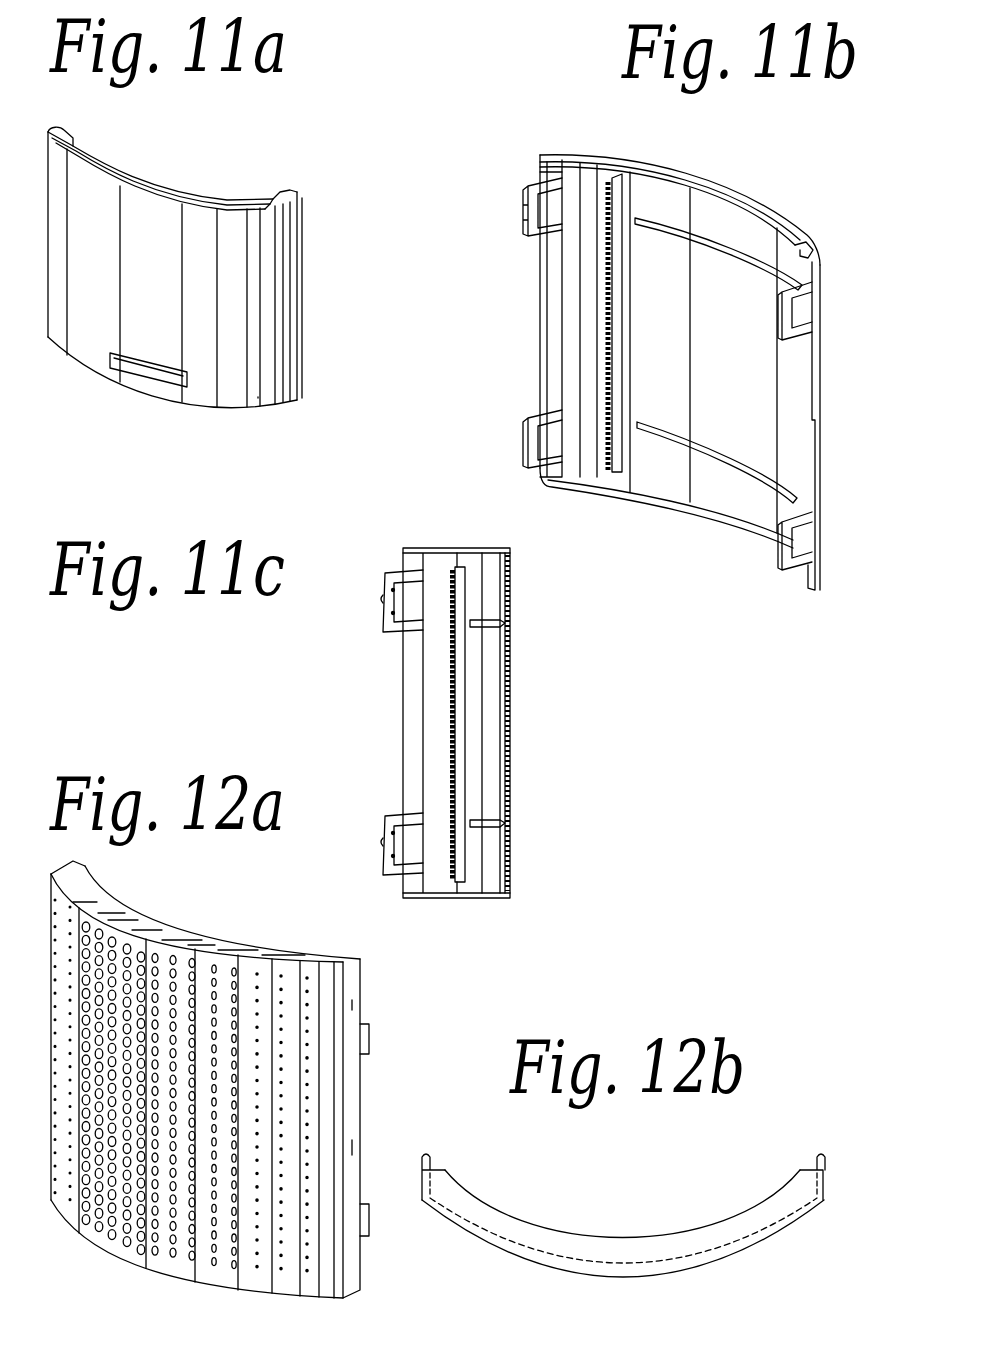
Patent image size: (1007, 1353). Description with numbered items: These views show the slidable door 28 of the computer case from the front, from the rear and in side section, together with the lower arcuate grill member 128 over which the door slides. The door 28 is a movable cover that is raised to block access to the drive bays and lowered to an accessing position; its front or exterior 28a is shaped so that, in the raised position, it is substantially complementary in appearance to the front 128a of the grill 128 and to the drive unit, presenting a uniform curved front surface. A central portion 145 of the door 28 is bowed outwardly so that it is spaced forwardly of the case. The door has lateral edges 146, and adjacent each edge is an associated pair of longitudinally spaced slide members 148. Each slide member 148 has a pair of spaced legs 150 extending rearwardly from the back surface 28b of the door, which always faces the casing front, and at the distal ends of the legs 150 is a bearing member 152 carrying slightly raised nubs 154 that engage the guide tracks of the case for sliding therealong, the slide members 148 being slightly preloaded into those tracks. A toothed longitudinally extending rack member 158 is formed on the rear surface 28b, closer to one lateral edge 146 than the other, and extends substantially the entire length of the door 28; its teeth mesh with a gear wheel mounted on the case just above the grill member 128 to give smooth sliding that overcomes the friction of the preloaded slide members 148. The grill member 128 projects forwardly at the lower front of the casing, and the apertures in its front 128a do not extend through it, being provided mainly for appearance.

In FIG. 11A, the slidable door 28 is at (218, 283).
In FIG. 11A, the exterior of the sliding door 28a is at (258, 397).
In FIG. 11B, the back surface of the door 28b is at (647, 355).
In FIG. 11A, the central portion of the door 145 is at (134, 172).
In FIG. 11B, the lateral edges of the door 146 is at (820, 438).
In FIG. 11B, the slide members 148 is at (510, 222).
In FIG. 11C, the slide members 148 is at (451, 697).
In FIG. 11C, the legs of the slide members 150 is at (410, 578).
In FIG. 11C, the bearing member 152 is at (383, 600).
In FIG. 11B, the raised nubs 154 is at (808, 335).
In FIG. 11B, the toothed longitudinally extending member 158 is at (617, 235).
In FIG. 11C, the toothed longitudinally extending member 158 is at (460, 727).
In FIG. 12A, the lower arcuate grill member 128 is at (261, 1100).
In FIG. 12B, the lower arcuate grill member 128 is at (828, 1129).
In FIG. 12A, the front of the grill 128a is at (130, 1266).